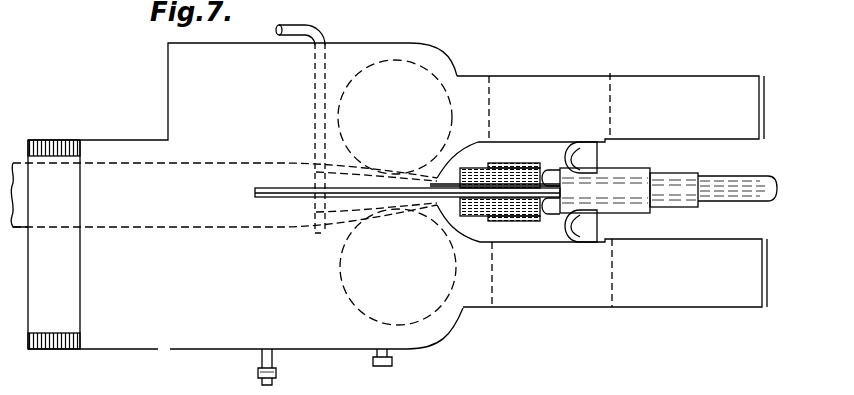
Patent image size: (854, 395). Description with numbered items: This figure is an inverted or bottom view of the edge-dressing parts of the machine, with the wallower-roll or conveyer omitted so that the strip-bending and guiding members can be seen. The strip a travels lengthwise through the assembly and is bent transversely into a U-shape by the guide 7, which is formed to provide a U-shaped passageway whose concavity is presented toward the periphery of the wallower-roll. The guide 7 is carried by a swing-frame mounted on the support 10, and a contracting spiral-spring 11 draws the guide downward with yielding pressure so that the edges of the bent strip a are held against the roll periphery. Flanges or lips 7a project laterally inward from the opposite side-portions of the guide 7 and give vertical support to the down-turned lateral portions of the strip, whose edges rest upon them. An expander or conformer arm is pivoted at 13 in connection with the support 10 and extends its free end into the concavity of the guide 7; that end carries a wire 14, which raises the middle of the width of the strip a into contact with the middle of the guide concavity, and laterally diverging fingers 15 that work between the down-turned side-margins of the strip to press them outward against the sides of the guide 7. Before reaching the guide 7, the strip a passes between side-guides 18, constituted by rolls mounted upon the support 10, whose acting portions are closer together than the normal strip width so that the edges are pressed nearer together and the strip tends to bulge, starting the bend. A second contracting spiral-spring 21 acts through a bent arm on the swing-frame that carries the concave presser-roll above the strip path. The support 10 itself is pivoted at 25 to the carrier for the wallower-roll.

The guide 7 is at (667, 170).
The flanges or lips 7a is at (510, 255).
The strip a is at (731, 172).
The support 10 is at (170, 342).
The contracting spiral-spring 11 is at (277, 375).
The pivot 13 is at (317, 131).
The wire 14 is at (606, 192).
The laterally diverging fingers 15 is at (565, 155).
The side-guides 18 is at (367, 64).
The contracting spiral-spring 21 is at (392, 361).
The pivot 25 is at (60, 0).